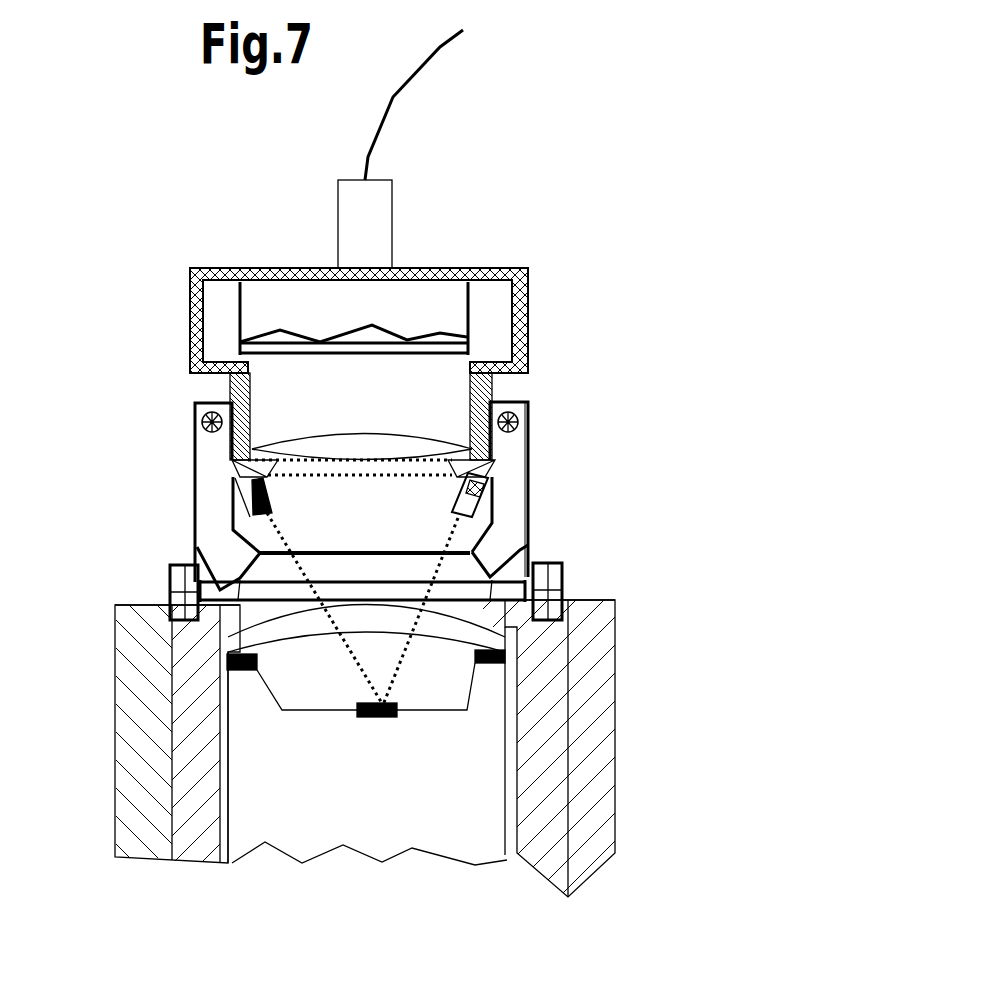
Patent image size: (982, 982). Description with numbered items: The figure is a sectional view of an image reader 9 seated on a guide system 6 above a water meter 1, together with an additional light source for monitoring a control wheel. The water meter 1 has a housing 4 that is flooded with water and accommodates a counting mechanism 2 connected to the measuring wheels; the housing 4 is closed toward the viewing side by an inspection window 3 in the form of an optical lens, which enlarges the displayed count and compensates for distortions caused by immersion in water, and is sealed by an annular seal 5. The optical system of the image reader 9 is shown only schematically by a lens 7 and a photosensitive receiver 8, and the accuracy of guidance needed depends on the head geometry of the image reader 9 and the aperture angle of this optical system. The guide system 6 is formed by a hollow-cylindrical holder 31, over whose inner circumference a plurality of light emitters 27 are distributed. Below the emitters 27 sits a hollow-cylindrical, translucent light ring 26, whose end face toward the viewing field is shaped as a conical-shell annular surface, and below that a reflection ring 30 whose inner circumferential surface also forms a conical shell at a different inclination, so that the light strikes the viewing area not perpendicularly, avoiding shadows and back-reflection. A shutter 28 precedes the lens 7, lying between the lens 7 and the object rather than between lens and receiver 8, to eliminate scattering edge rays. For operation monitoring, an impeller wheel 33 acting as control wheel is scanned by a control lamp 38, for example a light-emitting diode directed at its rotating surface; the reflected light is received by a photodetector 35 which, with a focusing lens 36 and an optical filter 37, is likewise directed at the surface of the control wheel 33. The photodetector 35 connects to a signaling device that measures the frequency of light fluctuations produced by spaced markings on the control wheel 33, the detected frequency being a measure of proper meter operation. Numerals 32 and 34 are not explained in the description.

The water meter 1 is at (622, 633).
The counting mechanism 2 is at (463, 747).
The inspection window 3 is at (280, 633).
The housing 4 is at (532, 825).
The annular seal 5 is at (200, 735).
The guide system 6 is at (471, 453).
The light ring 26 is at (517, 497).
The lens 7 is at (298, 437).
The photosensitive receiver 8 is at (313, 355).
The image reader 9 is at (517, 258).
The light emitters 27 is at (197, 405).
The shutter 28 is at (263, 473).
The reflection ring 30 is at (200, 578).
The holder 31 is at (540, 552).
The clamp 32 is at (563, 575).
The impeller wheel 33 is at (363, 712).
The threaded column 34 is at (488, 397).
The photodetector 35 is at (517, 517).
The focusing lens 36 is at (613, 556).
The optical filter 37 is at (498, 553).
The control lamp 38 is at (250, 513).